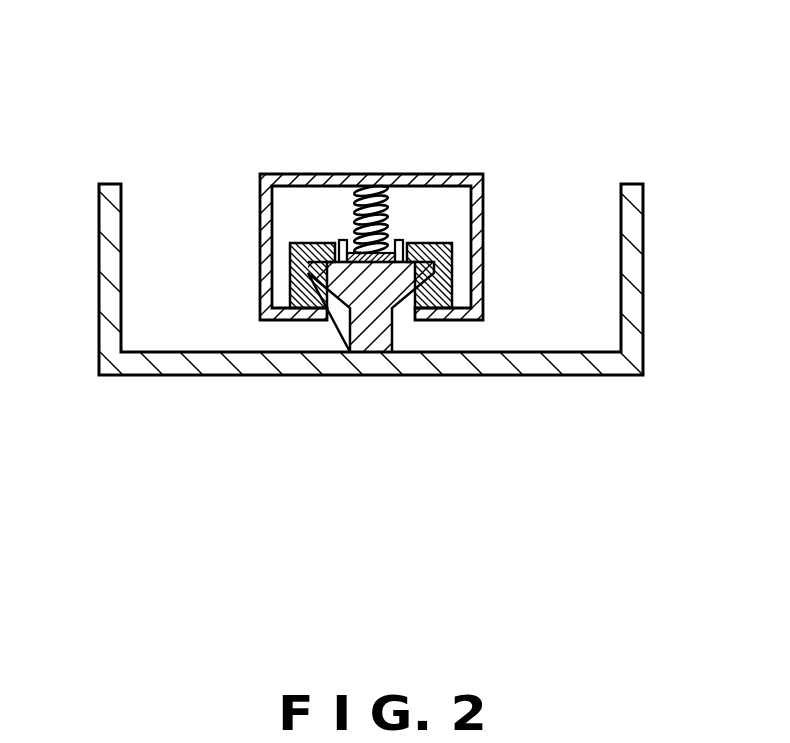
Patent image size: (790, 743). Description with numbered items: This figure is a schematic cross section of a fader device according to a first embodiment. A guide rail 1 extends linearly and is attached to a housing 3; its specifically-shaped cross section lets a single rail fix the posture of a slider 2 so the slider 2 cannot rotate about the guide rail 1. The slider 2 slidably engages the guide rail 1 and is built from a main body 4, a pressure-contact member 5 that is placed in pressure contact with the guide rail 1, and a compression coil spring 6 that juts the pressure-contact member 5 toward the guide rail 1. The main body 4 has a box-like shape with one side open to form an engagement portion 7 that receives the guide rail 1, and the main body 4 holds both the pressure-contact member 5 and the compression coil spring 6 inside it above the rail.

The guide rail 1 is at (393, 331).
The slider 2 is at (466, 174).
The housing 3 is at (268, 376).
The main body 4 is at (294, 174).
The pressure-contact member 5 is at (341, 240).
The compression coil spring 6 is at (380, 186).
The engagement portion 7 is at (423, 243).